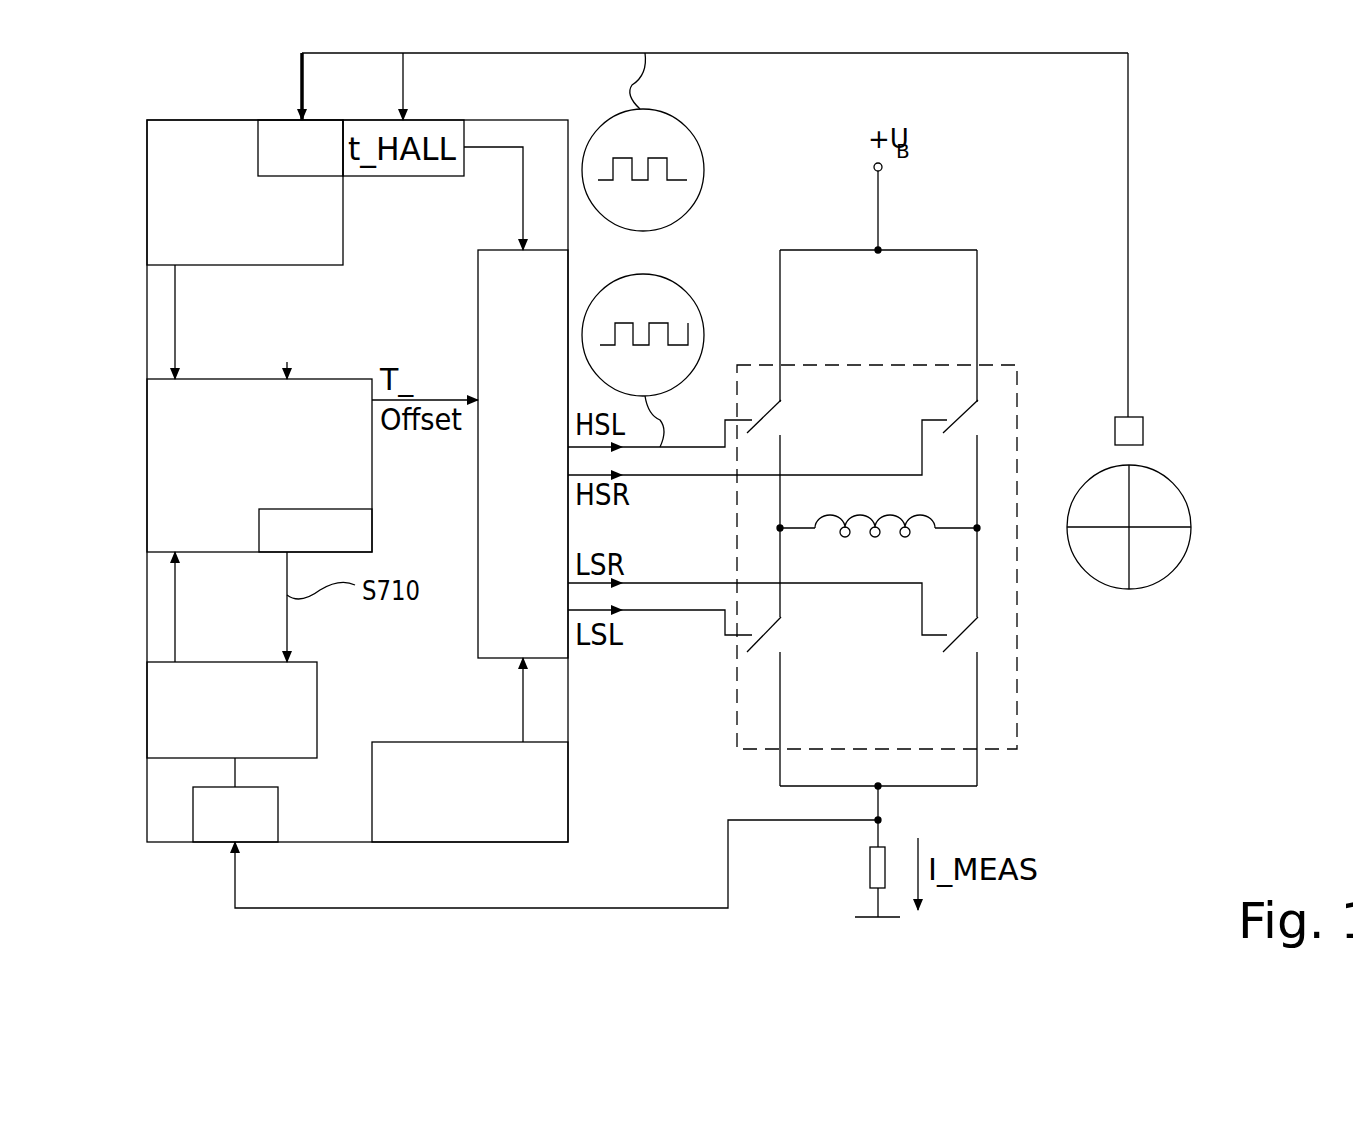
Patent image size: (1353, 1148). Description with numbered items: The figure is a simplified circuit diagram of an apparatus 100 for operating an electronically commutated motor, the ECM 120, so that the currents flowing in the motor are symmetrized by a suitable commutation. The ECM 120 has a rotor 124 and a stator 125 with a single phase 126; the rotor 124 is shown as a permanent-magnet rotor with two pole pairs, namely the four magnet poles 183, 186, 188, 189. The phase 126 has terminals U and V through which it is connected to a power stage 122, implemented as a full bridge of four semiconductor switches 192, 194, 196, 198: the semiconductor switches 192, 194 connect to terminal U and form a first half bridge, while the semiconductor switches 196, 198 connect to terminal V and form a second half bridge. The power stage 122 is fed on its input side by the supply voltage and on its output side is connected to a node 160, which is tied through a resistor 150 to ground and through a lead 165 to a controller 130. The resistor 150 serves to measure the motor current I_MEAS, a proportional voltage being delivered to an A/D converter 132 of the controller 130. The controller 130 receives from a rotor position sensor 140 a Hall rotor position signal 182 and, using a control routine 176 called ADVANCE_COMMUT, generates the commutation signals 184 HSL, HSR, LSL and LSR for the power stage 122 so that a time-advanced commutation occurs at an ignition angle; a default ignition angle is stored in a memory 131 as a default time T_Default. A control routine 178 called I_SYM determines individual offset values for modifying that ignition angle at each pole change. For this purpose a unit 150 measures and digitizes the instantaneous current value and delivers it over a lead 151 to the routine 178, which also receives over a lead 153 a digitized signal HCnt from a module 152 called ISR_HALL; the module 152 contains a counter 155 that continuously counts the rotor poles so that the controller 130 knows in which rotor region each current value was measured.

The apparatus 100 is at (1175, 190).
The ECM 120 is at (1040, 658).
The power stage 122 is at (1017, 728).
The rotor 124 is at (1205, 442).
The stator 125 is at (885, 545).
The phase 126 is at (888, 515).
The controller 130 is at (450, 646).
The memory 131 is at (372, 758).
The A/D converter 132 is at (278, 820).
The rotor position sensor 140 is at (1115, 432).
The resistor 150 is at (317, 680).
The lead 151 is at (175, 600).
The module 152 is at (383, 318).
The lead 153 is at (175, 295).
The counter 155 is at (258, 148).
The node 160 is at (885, 820).
The lead 165 is at (235, 890).
The control routine 176 is at (546, 338).
The control routine 178 is at (343, 430).
The rotor position signal 182 is at (688, 127).
The magnet pole 183 is at (1173, 512).
The commutation signals 184 is at (693, 293).
The magnet pole 186 is at (1078, 540).
The magnet pole 188 is at (1113, 478).
The magnet pole 189 is at (1180, 543).
The semiconductor switch 192 is at (780, 423).
The semiconductor switch 194 is at (780, 635).
The semiconductor switch 196 is at (963, 401).
The semiconductor switch 198 is at (960, 652).